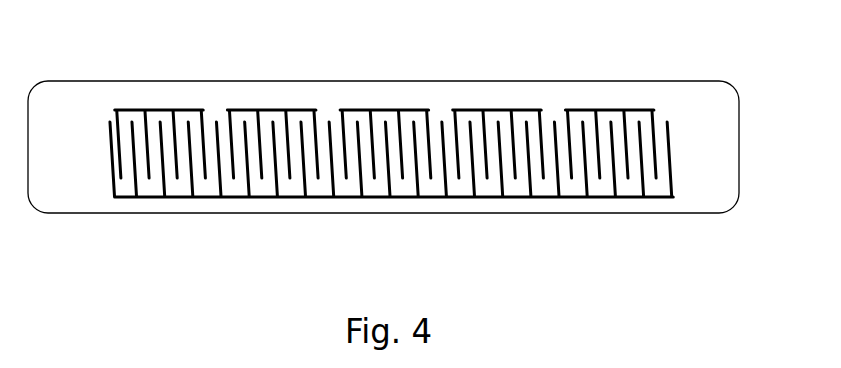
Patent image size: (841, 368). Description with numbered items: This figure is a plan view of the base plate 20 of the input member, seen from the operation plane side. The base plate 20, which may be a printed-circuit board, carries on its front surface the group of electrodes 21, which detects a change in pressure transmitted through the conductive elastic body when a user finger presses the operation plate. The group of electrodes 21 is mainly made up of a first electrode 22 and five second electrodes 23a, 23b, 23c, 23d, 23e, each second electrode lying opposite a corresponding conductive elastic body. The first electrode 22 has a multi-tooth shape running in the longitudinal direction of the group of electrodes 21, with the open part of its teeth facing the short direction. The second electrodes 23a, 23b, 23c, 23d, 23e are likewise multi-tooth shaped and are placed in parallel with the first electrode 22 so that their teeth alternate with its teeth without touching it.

The base plate 20 is at (692, 92).
The group of electrodes 21 is at (372, 156).
The first electrode 22 is at (375, 197).
The second electrode 23a is at (187, 108).
The second electrode 23b is at (308, 108).
The second electrode 23c is at (418, 108).
The second electrode 23d is at (532, 108).
The second electrode 23e is at (645, 108).